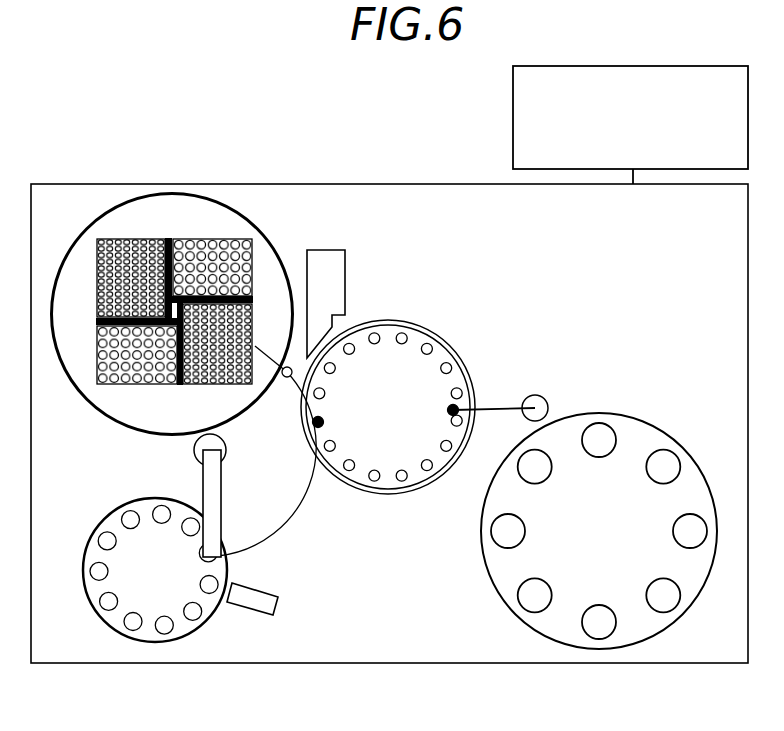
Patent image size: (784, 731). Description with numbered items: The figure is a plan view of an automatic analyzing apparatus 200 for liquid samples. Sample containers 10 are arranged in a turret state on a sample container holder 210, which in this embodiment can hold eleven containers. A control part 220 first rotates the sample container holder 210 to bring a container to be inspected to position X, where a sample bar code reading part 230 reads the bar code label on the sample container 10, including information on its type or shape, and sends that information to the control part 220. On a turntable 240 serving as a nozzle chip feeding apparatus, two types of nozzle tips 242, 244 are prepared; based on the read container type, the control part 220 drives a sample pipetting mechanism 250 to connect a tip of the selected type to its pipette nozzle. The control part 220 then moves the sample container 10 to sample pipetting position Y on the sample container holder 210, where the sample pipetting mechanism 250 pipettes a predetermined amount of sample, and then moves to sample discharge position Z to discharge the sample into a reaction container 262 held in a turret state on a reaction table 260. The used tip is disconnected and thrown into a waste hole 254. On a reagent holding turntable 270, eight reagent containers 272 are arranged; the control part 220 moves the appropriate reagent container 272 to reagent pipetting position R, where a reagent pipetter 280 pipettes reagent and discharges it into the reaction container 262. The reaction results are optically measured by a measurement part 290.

The analyzing apparatus 200 is at (324, 87).
The control part 220 is at (512, 117).
The turntable 240 is at (150, 193).
The nozzle tip 242 is at (132, 241).
The nozzle tip 244 is at (208, 247).
The measurement part 290 is at (345, 268).
The reaction table 260 is at (388, 417).
The reaction container 262 is at (372, 492).
The reagent pipetter 280 is at (537, 397).
The reagent holding turntable 270 is at (599, 540).
The reagent container 272 is at (600, 634).
The sample container holder 210 is at (136, 606).
The sample container 10 is at (132, 622).
The sample pipetting mechanism 250 is at (221, 512).
The waste hole 254 is at (287, 378).
The sample bar code reading part 230 is at (263, 615).